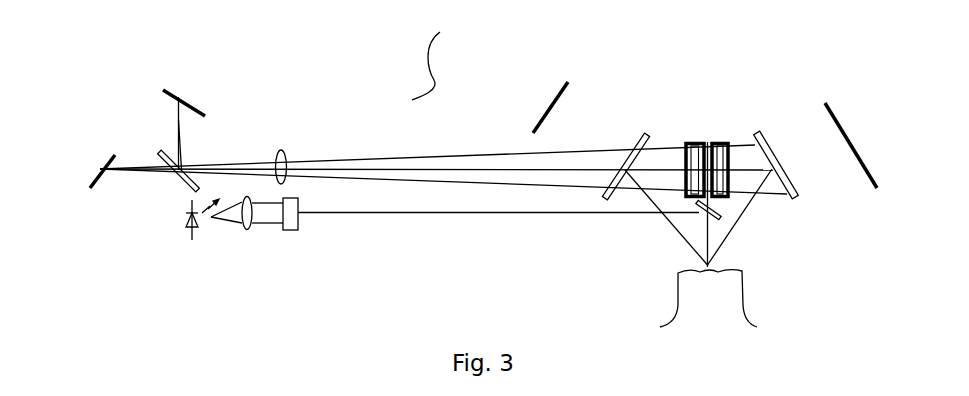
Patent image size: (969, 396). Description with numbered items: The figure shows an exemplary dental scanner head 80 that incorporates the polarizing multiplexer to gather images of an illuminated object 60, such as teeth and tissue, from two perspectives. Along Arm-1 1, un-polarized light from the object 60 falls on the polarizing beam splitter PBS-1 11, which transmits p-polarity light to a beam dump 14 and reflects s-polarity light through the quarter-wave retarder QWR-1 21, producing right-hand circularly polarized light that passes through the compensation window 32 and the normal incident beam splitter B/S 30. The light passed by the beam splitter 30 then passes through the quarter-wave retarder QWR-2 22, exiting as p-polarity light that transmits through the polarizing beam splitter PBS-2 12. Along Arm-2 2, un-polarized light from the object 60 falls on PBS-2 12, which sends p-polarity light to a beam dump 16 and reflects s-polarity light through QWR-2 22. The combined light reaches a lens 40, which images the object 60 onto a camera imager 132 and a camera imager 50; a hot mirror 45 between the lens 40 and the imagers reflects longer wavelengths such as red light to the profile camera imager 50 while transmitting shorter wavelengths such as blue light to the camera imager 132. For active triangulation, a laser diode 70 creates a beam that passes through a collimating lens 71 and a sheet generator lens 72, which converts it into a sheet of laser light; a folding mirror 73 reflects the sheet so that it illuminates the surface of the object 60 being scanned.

The Arm- 1 is at (740, 220).
The Arm- 2 is at (663, 220).
The Polarizing Beam Splitter (PBS-1) 11 is at (773, 145).
The Polarizing Beam Splitter (PBS-2) 12 is at (630, 142).
The beam dump 14 is at (845, 122).
The beam dump 16 is at (548, 98).
The Quarter-Wave Retarder (QWR-1) 21 is at (729, 140).
The Quarter-Wave Retarder (QWR-2) 22 is at (685, 142).
The normal incident Beam Splitter (B/S) 30 is at (708, 142).
The compensation window 32 is at (719, 140).
The lens 40 is at (281, 148).
The hot mirror 45 is at (182, 186).
The camera imager 50 is at (177, 88).
The object 60 is at (755, 297).
The laser diode 70 is at (182, 215).
The collimating lens 71 is at (245, 232).
The sheet generator lens 72 is at (292, 235).
The folding mirror 73 is at (716, 207).
The dental scanner head 80 is at (429, 52).
The camera imager 132 is at (93, 170).